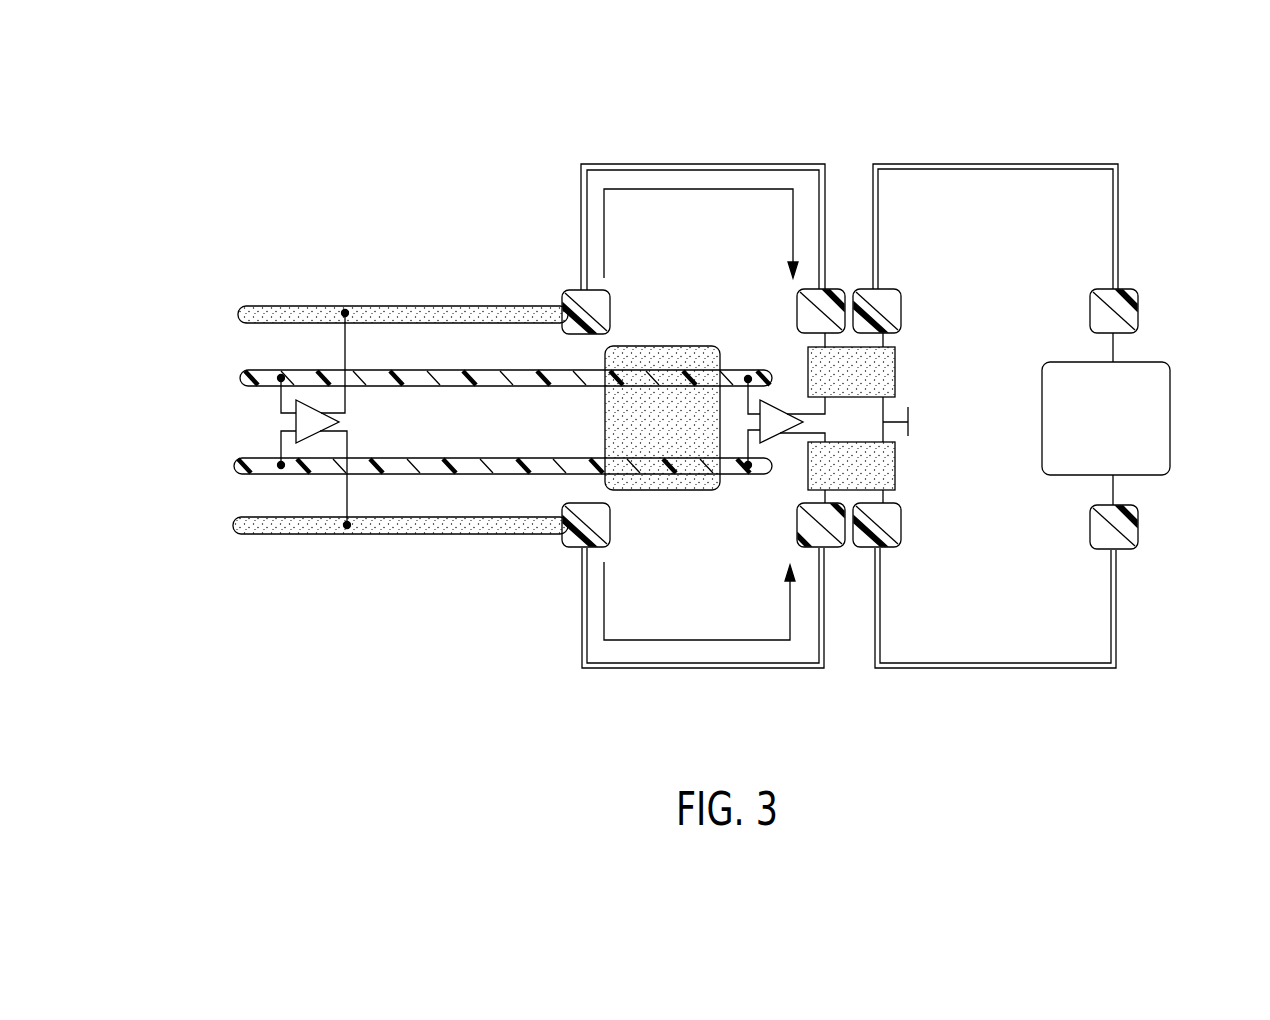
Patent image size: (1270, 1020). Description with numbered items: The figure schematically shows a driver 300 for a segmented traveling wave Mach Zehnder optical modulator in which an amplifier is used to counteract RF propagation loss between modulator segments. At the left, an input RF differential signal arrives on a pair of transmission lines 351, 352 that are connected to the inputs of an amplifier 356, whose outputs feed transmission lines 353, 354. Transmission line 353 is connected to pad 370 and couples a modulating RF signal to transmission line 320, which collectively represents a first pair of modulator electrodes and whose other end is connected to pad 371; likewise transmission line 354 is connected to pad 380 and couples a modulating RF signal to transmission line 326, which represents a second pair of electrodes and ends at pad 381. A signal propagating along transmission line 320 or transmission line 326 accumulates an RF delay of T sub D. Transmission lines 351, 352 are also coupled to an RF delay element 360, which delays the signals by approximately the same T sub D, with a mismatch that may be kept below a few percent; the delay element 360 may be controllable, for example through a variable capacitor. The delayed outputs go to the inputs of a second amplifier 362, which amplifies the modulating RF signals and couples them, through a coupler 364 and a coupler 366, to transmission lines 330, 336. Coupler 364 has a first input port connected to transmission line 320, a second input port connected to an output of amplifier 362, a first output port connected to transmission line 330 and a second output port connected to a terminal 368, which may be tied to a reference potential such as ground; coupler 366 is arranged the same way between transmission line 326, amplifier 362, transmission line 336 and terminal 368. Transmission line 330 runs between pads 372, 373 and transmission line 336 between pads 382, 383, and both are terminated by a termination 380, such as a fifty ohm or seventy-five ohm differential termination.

The driver 300 is at (236, 132).
The transmission line 320 is at (699, 164).
The transmission line 326 is at (698, 669).
The transmission line 330 is at (1009, 164).
The transmission line 336 is at (993, 669).
The transmission line 351 is at (240, 382).
The transmission line 352 is at (235, 463).
The transmission line 353 is at (255, 306).
The transmission line 354 is at (255, 535).
The amplifier 356 is at (318, 413).
The RF delay element 360 is at (670, 346).
The amplifier 362 is at (797, 414).
The coupler 364 is at (895, 368).
The coupler 366 is at (895, 478).
The terminal 368 is at (912, 424).
The pad 370 is at (570, 291).
The pad 371 is at (797, 312).
The pad 372 is at (902, 312).
The pad 373 is at (1090, 312).
The termination 380 is at (1170, 448).
The pad 381 is at (797, 530).
The pad 382 is at (902, 530).
The pad 383 is at (1090, 533).